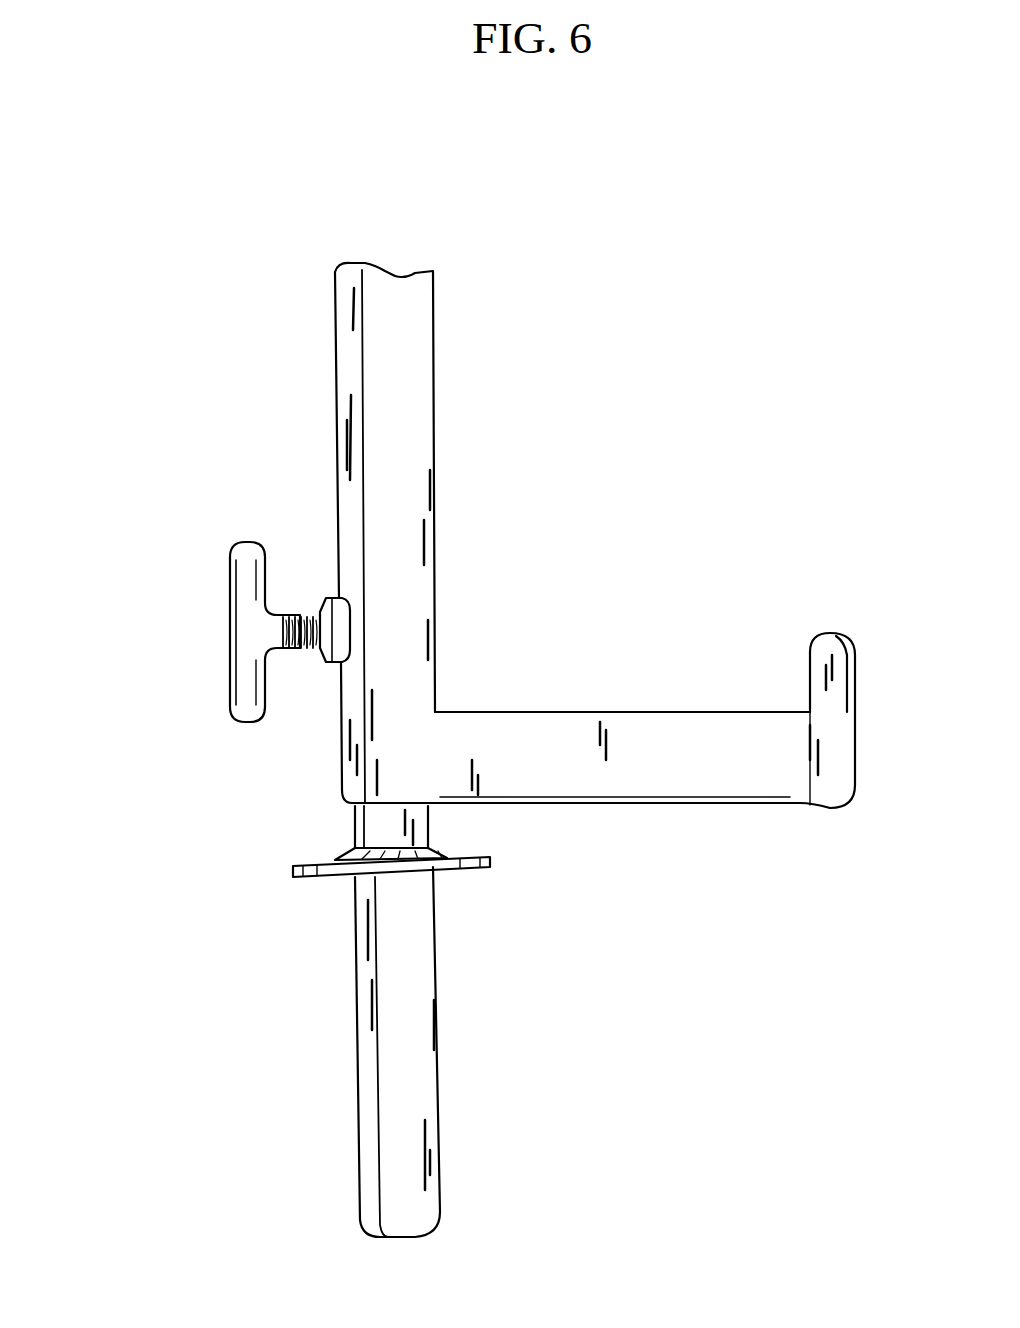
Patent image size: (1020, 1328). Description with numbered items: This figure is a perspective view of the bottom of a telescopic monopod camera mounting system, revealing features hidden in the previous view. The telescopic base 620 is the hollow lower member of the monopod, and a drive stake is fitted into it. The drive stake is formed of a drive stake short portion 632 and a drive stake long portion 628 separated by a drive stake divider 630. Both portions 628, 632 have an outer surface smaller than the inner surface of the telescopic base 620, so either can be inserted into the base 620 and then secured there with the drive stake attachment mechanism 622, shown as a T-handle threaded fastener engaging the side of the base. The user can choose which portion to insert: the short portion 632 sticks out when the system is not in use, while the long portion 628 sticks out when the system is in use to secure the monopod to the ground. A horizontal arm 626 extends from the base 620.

The telescopic base 620 is at (380, 452).
The drive stake attachment mechanism 622 is at (288, 618).
The horizontal arm with hook 626 is at (558, 737).
The drive stake long portion 628 is at (405, 810).
The drive stake divider 630 is at (380, 866).
The drive stake short portion 632 is at (407, 1150).